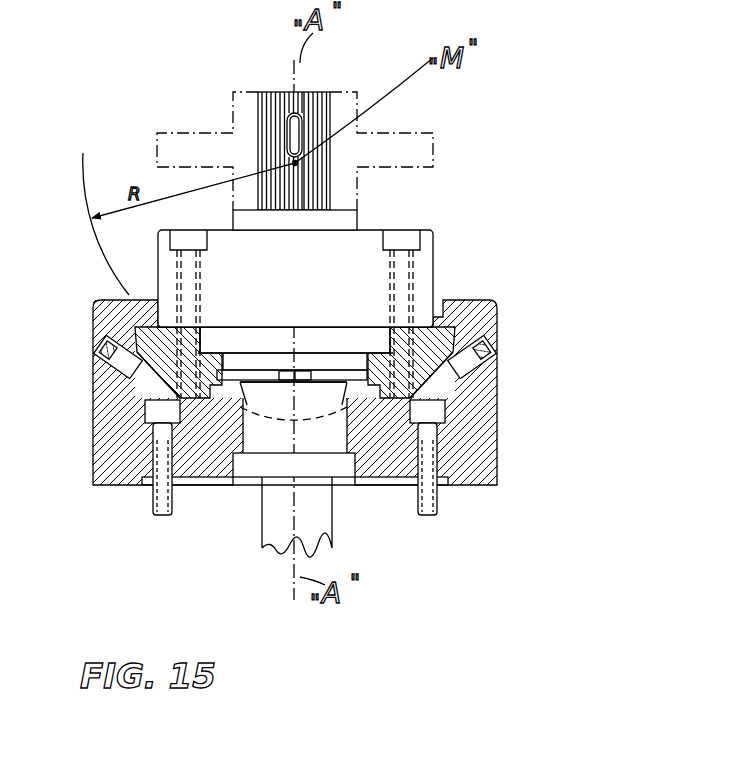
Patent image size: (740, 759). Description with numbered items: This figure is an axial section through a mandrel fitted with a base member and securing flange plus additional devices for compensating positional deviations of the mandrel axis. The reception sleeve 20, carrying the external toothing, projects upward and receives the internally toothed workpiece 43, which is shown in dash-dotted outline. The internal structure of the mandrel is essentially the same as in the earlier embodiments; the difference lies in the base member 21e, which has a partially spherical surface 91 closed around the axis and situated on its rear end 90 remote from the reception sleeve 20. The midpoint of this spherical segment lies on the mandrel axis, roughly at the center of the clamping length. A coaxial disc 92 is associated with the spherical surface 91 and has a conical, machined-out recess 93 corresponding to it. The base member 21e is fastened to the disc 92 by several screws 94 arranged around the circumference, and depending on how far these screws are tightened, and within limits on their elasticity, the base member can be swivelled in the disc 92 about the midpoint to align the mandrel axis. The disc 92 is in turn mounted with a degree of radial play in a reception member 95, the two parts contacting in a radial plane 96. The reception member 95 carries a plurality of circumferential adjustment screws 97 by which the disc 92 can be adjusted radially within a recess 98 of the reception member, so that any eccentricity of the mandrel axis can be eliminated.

The reception sleeve 20 is at (320, 97).
The workpiece 43 is at (413, 152).
The base member 21e is at (360, 248).
The screws 94 is at (190, 263).
The partially spherical surface 91 is at (357, 337).
The adjustment screws 97 is at (97, 377).
The disc 92 is at (440, 387).
The reception member 95 is at (483, 460).
The recess 98 is at (125, 400).
The conical recess 93 is at (212, 380).
The rear end 90 is at (275, 355).
The radial plane 96 is at (390, 397).